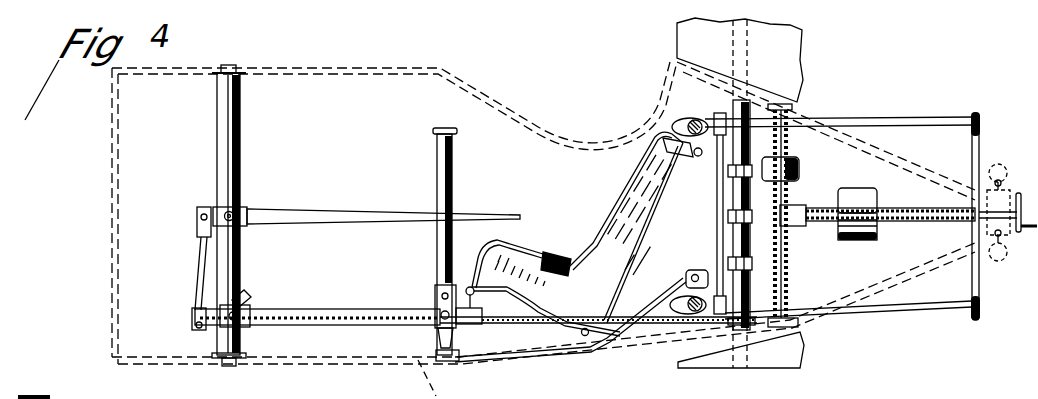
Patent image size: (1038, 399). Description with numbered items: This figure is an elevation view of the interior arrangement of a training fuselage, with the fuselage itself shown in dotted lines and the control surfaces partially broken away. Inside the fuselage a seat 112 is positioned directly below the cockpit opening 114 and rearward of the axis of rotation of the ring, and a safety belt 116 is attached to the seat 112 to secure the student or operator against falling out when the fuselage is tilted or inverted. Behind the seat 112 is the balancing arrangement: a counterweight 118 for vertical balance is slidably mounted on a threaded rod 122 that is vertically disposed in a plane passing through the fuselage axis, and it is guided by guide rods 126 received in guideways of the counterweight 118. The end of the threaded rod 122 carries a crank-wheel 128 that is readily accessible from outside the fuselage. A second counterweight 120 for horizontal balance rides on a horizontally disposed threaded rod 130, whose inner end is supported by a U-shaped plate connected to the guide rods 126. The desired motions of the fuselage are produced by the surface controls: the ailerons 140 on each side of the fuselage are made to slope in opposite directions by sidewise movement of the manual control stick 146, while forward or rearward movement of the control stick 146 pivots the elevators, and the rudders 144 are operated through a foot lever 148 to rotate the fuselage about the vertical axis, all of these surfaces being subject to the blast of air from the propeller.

The seat 112 is at (585, 256).
The cockpit opening 114 is at (525, 115).
The safety belt 116 is at (552, 252).
The counterweight 118 is at (800, 168).
The counterweight 120 is at (852, 191).
The threaded rod 122 is at (788, 193).
The guide rods 126 is at (790, 249).
The crank-wheel 128 is at (798, 327).
The threaded rod 130 is at (897, 208).
The ailerons 140 is at (315, 210).
The rudders 144 is at (803, 62).
The control stick 146 is at (455, 177).
The foot lever 148 is at (245, 307).